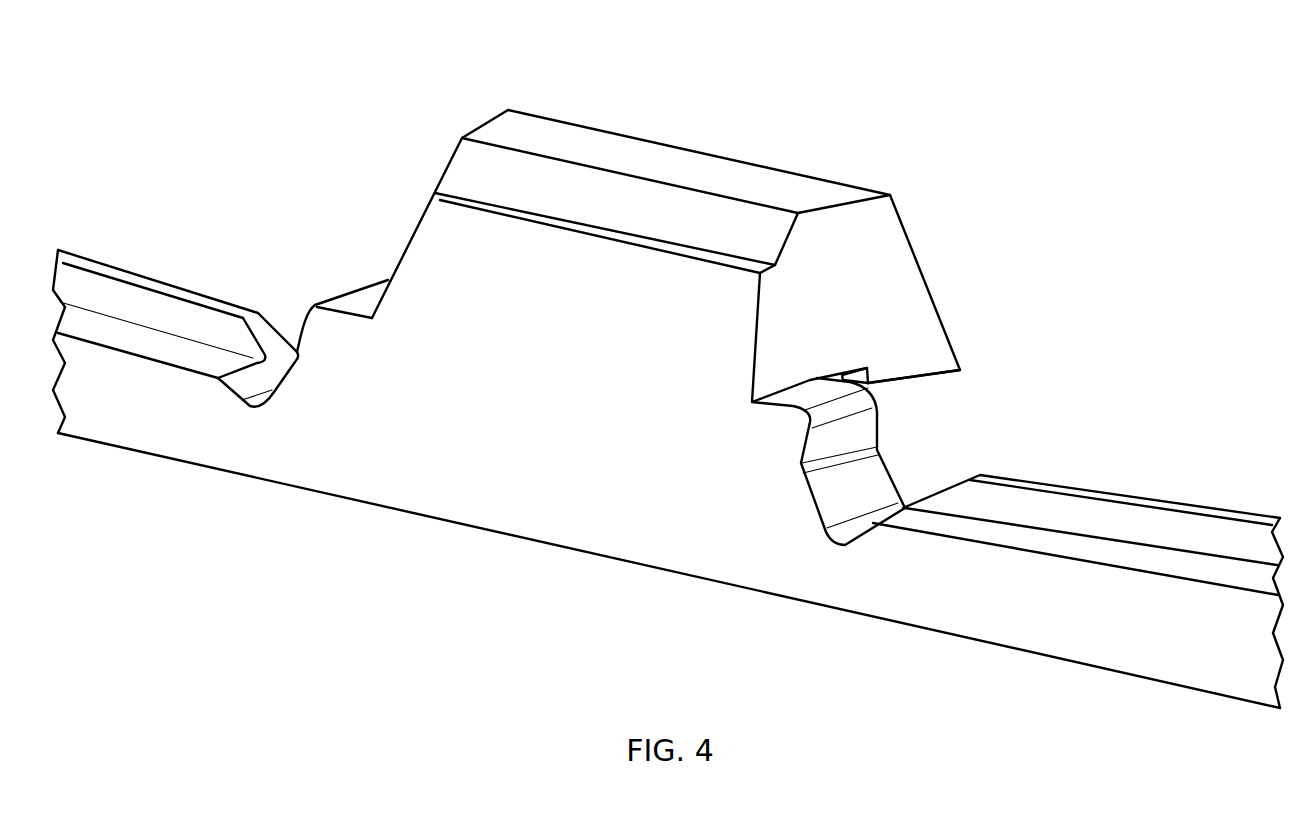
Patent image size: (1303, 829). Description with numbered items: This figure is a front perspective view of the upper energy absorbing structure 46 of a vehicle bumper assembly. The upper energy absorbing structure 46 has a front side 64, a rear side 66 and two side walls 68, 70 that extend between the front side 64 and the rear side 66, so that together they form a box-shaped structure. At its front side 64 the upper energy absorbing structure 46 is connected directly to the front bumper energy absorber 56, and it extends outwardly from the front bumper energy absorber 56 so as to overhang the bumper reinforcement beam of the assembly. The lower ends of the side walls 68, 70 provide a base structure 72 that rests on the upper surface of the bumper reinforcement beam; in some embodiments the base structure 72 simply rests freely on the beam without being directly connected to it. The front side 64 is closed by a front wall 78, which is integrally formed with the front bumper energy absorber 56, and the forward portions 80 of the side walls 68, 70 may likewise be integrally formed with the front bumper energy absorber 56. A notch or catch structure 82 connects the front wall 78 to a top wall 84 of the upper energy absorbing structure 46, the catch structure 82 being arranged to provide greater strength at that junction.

The upper energy absorbing structure 46 is at (673, 91).
The front bumper energy absorber 56 is at (712, 583).
The front side 64 is at (528, 393).
The rear side 66 is at (939, 259).
The side wall 68 is at (400, 247).
The side wall 70 is at (920, 318).
The base structure 72 is at (934, 377).
The front wall 78 is at (438, 209).
The forward portions 80 is at (383, 283).
The catch structure 82 is at (613, 198).
The top wall 84 is at (817, 191).